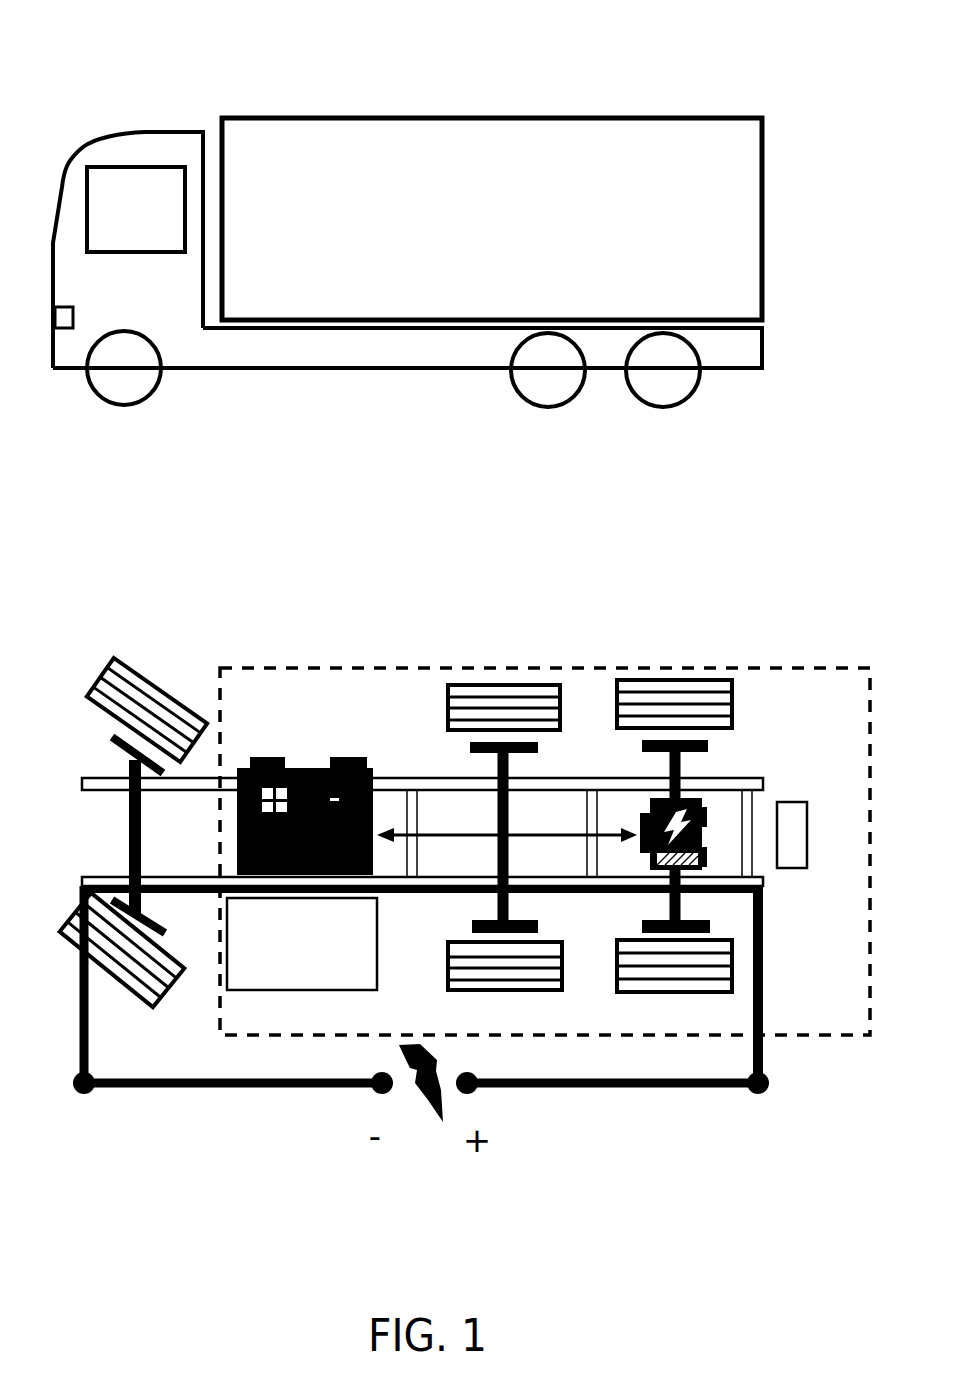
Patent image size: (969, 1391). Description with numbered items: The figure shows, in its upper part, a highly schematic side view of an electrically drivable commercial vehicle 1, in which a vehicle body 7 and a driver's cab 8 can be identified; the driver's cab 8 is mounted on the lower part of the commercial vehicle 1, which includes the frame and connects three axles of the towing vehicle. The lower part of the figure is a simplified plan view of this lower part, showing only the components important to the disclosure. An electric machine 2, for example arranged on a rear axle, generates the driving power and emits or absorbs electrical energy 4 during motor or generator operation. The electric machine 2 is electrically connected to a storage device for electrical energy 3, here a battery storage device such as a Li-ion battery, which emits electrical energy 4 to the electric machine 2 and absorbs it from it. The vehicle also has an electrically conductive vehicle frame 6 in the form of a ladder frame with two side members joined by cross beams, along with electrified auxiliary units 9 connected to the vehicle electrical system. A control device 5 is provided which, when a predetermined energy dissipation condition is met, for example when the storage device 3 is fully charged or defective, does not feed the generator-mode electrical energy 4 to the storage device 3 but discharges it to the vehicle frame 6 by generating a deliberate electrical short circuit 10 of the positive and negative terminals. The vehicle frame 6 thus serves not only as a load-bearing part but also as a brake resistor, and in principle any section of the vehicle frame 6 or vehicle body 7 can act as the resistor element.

The electrically drivable commercial vehicle 1 is at (303, 98).
The electric machine 2 is at (695, 795).
The storage device for electrical energy 3 is at (303, 765).
The electrical energy 4 is at (535, 830).
The control device 5 is at (791, 815).
The vehicle frame 6 is at (203, 880).
The vehicle body 7 is at (705, 145).
The driver's cab 8 is at (140, 153).
The electrified auxiliary units 9 is at (260, 963).
The deliberate electrical short circuit 10 is at (440, 1127).